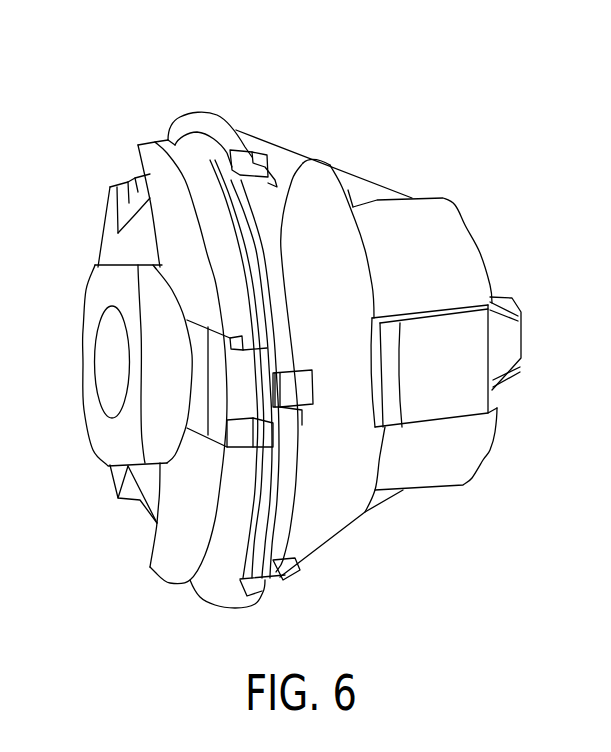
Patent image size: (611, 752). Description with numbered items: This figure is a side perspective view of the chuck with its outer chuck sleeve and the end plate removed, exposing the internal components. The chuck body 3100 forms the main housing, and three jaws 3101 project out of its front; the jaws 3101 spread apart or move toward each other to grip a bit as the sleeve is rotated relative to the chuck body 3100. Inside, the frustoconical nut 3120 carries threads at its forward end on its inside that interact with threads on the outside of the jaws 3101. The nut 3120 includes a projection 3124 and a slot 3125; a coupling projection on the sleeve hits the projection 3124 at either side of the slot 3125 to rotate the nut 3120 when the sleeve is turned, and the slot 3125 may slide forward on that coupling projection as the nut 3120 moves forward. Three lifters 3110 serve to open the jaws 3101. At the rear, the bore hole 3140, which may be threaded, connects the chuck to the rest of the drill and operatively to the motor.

The chuck body 3100 is at (140, 282).
The jaws 3101 is at (507, 333).
The lifters 3110 is at (470, 393).
The nut 3120 is at (315, 195).
The projection 3124 is at (225, 123).
The slot 3125 is at (263, 150).
The bore hole 3140 is at (96, 362).